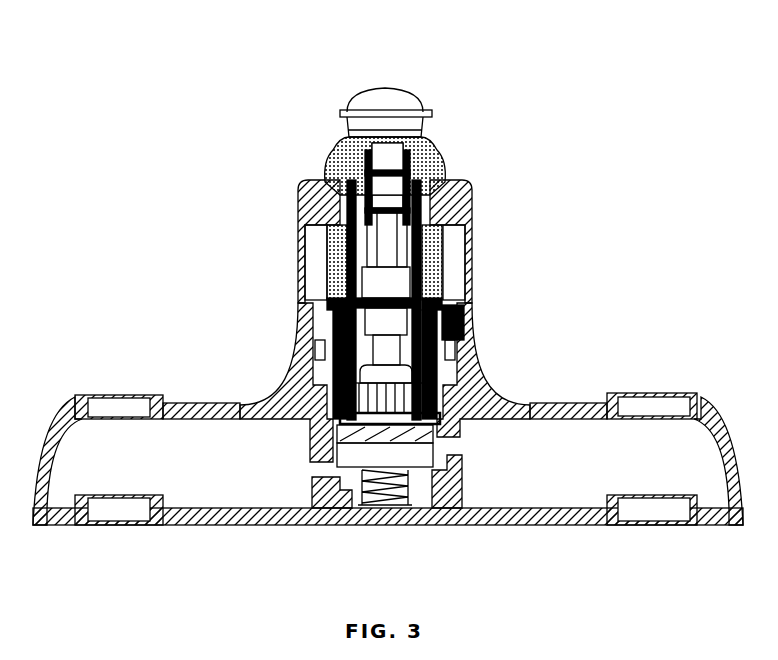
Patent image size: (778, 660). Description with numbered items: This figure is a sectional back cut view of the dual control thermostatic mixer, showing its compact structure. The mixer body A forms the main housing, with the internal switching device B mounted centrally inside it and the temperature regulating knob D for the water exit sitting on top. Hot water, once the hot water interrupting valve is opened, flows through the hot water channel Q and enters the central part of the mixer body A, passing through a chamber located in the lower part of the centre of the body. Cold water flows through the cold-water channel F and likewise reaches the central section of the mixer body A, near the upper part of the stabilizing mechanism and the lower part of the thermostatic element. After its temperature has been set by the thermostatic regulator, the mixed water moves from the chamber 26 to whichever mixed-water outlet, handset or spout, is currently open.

The mixer body A is at (510, 408).
The internal switching device B is at (450, 290).
The temperature regulating knob D is at (408, 92).
The chamber 26 is at (462, 322).
The hot water channel Q is at (182, 487).
The cold-water channel F is at (607, 483).